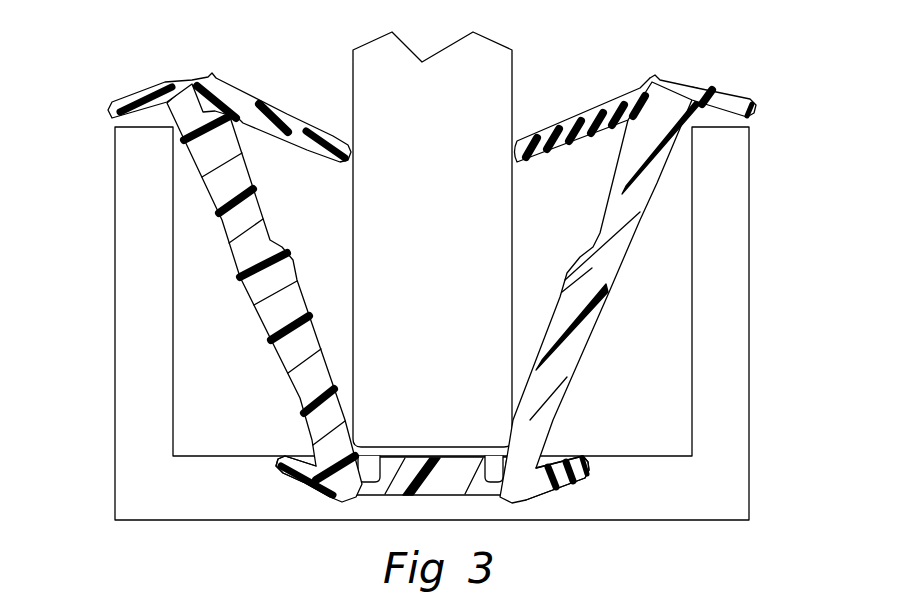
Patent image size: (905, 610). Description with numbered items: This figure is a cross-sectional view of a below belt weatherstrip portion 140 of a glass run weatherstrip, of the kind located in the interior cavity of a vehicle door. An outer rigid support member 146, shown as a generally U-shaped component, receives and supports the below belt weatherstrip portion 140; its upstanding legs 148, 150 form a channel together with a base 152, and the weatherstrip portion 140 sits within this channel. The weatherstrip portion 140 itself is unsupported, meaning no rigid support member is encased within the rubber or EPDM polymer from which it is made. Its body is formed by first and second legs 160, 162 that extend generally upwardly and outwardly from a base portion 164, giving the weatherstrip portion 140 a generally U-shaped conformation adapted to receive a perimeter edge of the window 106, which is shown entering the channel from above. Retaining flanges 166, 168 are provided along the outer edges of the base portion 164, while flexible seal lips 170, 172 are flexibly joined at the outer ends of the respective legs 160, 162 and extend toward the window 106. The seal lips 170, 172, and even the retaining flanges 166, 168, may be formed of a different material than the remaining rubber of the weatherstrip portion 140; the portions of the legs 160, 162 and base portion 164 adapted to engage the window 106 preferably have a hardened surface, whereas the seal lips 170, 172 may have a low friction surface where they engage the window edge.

The window 106 is at (455, 247).
The below belt weatherstrip portion 140 is at (690, 64).
The outer rigid support member 146 is at (128, 403).
The upstanding leg 148 is at (141, 256).
The upstanding leg 150 is at (722, 262).
The base 152 is at (228, 490).
The first leg 160 is at (300, 365).
The second leg 162 is at (565, 364).
The base portion 164 is at (468, 497).
The retaining flange 166 is at (298, 489).
The retaining flange 168 is at (563, 487).
The flexible seal lip 170 is at (261, 102).
The flexible seal lip 172 is at (610, 96).